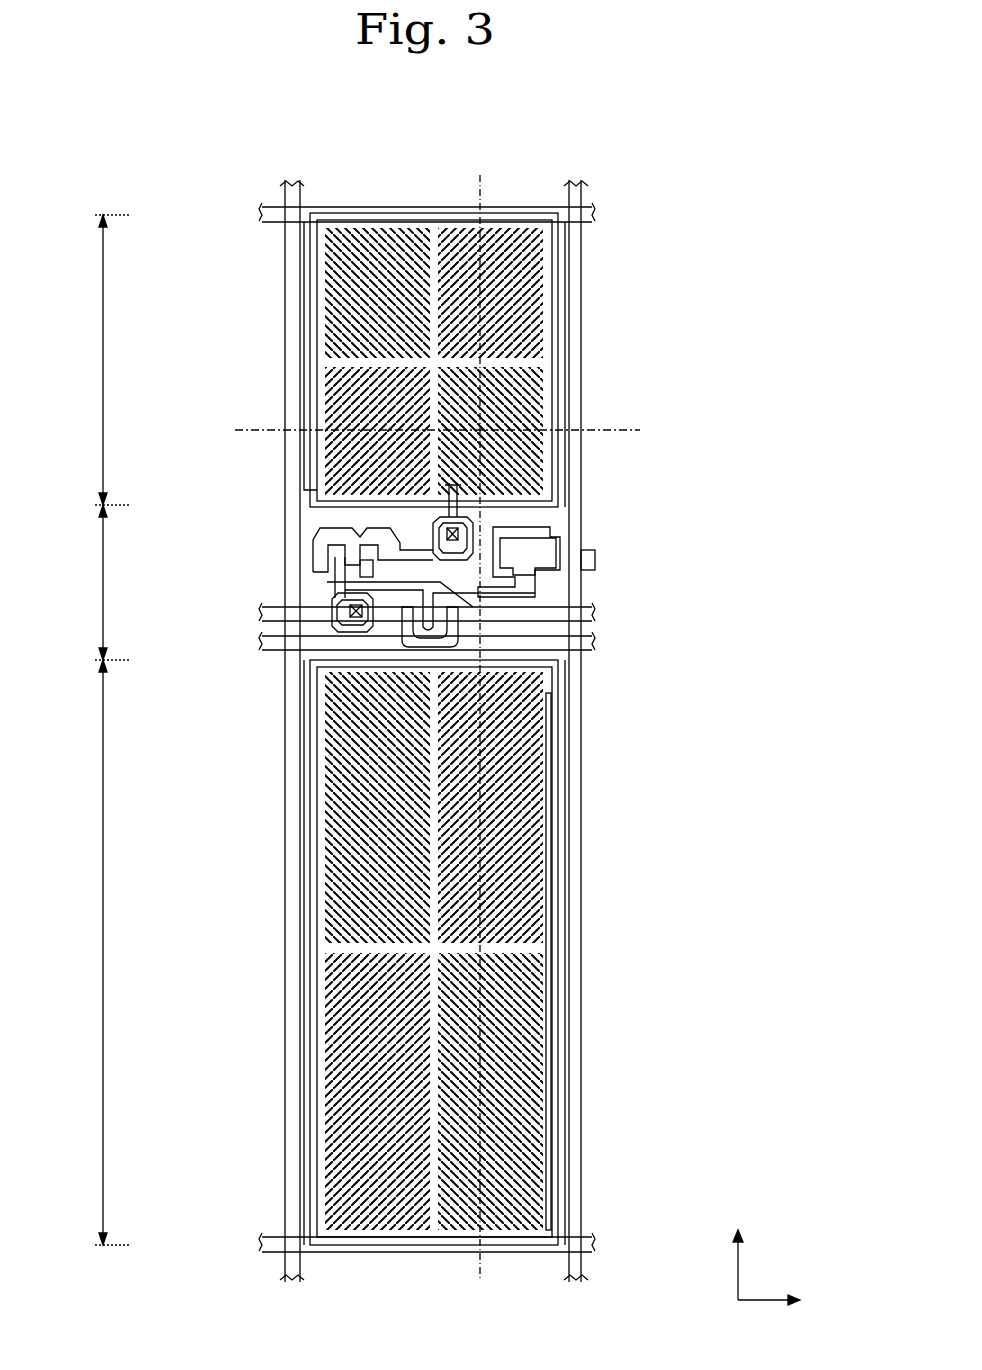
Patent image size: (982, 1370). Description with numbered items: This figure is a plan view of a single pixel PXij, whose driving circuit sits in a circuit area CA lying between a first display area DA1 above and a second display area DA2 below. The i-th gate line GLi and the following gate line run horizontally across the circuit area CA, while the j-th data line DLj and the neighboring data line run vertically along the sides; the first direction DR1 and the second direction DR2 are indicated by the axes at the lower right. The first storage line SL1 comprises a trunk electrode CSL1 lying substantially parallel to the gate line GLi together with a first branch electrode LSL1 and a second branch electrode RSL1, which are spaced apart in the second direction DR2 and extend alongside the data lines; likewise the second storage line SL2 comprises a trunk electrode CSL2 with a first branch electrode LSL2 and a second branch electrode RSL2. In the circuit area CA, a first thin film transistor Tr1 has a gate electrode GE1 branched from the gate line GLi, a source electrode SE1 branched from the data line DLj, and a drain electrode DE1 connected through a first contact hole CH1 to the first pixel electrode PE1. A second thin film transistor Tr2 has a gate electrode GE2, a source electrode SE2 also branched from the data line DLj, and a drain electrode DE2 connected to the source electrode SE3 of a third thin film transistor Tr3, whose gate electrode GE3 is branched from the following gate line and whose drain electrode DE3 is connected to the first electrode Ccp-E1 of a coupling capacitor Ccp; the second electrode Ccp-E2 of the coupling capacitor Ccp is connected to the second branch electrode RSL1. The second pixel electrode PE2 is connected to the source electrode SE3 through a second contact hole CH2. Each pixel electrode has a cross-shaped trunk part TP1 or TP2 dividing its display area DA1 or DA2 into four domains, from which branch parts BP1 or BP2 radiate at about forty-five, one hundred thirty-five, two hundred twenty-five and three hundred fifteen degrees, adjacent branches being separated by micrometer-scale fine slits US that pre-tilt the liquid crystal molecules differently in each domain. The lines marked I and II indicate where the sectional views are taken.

The pixel PXij is at (654, 122).
The j-th data line DLj is at (297, 178).
The trunk electrode CSL1 is at (405, 205).
The trunk electrode CSL2 is at (388, 1254).
The first storage line SL1 is at (608, 212).
The second storage line SL2 is at (608, 1245).
The first branch electrode LSL1 is at (303, 268).
The second branch electrode RSL1 is at (566, 262).
The first branch electrode LSL2 is at (303, 792).
The second branch electrode RSL2 is at (566, 792).
The fine slits US is at (540, 292).
The first branch parts BP1 is at (540, 325).
The first trunk part TP1 is at (536, 358).
The first pixel electrode PE1 is at (511, 721).
The second branch parts BP2 is at (540, 912).
The second trunk part TP2 is at (536, 945).
The second pixel electrode PE2 is at (511, 952).
The first display area DA1 is at (93, 360).
The second display area DA2 is at (93, 952).
The circuit area CA is at (101, 582).
The first thin film transistor Tr1 is at (286, 512).
The drain electrode DE1 is at (397, 540).
The source electrode SE1 is at (373, 535).
The gate electrode GE1 is at (360, 527).
The second thin film transistor Tr2 is at (337, 579).
The gate electrode GE2 is at (320, 530).
The source electrode SE2 is at (338, 557).
The drain electrode DE2 is at (365, 566).
The second contact hole CH2 is at (352, 612).
The third thin film transistor Tr3 is at (298, 672).
The gate electrode GE3 is at (403, 625).
The source electrode SE3 is at (418, 648).
The drain electrode DE3 is at (428, 630).
The coupling capacitor Ccp is at (622, 548).
The first electrode Ccp-E1 is at (547, 533).
The second electrode Ccp-E2 is at (528, 527).
The first contact hole CH1 is at (473, 533).
The i-th gate line GLi is at (598, 614).
The section line I-I' I is at (480, 175).
The section line II-II' II is at (250, 426).
The first direction DR1 is at (741, 1248).
The second direction DR2 is at (793, 1301).